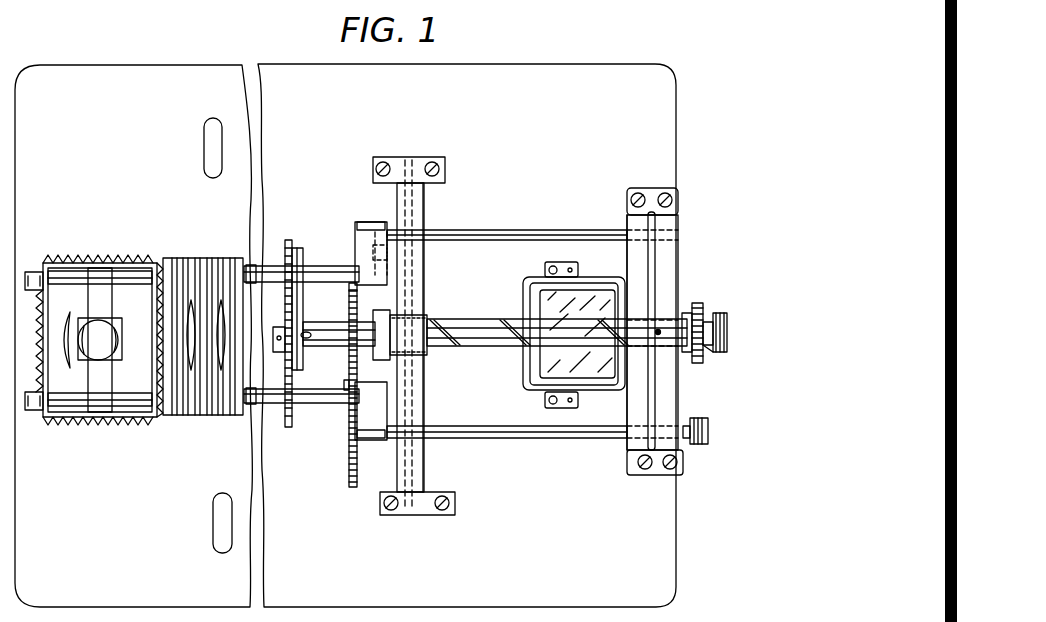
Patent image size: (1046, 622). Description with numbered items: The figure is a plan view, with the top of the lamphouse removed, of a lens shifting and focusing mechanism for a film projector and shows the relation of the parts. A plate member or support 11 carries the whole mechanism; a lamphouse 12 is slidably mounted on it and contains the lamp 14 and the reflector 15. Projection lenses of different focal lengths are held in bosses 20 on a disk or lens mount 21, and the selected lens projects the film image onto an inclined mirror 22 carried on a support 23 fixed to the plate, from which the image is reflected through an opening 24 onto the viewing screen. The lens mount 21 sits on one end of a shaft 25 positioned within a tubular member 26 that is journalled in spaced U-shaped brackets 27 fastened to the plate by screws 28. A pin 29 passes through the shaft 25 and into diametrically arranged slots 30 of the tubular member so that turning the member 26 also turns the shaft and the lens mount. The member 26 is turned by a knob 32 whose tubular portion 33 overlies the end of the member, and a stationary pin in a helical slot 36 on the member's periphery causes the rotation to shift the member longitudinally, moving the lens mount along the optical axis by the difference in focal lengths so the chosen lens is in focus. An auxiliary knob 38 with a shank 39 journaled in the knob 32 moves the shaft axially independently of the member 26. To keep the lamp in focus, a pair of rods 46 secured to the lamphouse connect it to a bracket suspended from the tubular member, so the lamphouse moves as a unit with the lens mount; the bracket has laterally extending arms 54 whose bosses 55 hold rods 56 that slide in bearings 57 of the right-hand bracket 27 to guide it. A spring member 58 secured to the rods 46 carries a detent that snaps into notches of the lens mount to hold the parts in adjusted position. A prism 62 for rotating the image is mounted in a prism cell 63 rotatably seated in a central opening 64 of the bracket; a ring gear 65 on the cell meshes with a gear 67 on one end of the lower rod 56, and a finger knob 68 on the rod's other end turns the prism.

The plate member or support 11 is at (672, 82).
The lamphouse 12 is at (156, 262).
The lamp 14 is at (98, 348).
The reflector 15 is at (60, 330).
The bosses 20 is at (285, 262).
The disk or lens mount 21 is at (276, 400).
The inclined mirror 22 is at (580, 290).
The support 23 is at (562, 408).
The opening 24 is at (523, 378).
The shaft 25 is at (250, 395).
The tubular member 26 is at (485, 322).
The U-shaped brackets 27 is at (424, 470).
The screws 28 is at (434, 163).
The pin 29 is at (304, 334).
The slots 30 is at (308, 340).
The knob 32 is at (702, 305).
The tubular portion 33 is at (688, 315).
The helical slot 36 is at (434, 326).
The auxiliary knob 38 is at (722, 322).
The shank 39 is at (707, 350).
The rods 46 is at (248, 274).
The laterally extending arms 54 is at (358, 255).
The bosses 55 is at (370, 226).
The rods 56 is at (519, 226).
The bearings 57 is at (630, 250).
The spring member 58 is at (279, 352).
The prism 62 is at (410, 300).
The prism cell 63 is at (388, 252).
The central opening 64 is at (350, 388).
The ring gear 65 is at (352, 288).
The gear 67 is at (353, 487).
The finger knob 68 is at (708, 432).